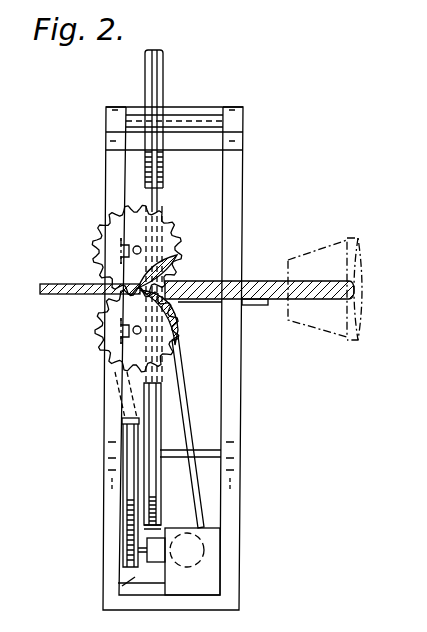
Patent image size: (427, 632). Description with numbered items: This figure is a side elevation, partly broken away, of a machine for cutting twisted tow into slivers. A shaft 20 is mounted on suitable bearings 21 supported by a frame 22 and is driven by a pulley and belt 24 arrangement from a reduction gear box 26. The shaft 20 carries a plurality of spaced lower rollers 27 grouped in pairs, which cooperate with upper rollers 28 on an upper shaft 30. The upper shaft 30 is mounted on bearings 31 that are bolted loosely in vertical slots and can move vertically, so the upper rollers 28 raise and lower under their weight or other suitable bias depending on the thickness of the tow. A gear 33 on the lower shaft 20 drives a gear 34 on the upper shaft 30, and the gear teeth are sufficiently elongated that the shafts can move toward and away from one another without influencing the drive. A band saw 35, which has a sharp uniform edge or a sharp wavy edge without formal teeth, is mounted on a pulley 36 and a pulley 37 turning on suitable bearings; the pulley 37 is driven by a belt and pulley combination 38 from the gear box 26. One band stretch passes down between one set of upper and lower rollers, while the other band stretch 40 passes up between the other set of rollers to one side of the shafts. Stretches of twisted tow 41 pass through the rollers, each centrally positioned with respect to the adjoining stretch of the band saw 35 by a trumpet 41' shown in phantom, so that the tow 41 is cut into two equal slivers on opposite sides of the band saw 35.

The shaft 20 is at (133, 330).
The bearings 21 is at (97, 318).
The frame 22 is at (112, 577).
The belt 24 is at (185, 413).
The reduction gear box 26 is at (212, 576).
The lower rollers 27 is at (173, 322).
The upper rollers 28 is at (172, 270).
The upper shaft 30 is at (133, 249).
The bearings 31 is at (110, 221).
The gear 33 is at (104, 350).
The gear 34 is at (96, 258).
The band saw 35 is at (158, 198).
The pulley 36 is at (164, 68).
The pulley 37 is at (156, 508).
The belt and pulley combination 38 is at (128, 511).
The band stretch 40 is at (150, 383).
The twisted tow 41 is at (325, 289).
The trumpet 41' is at (324, 231).